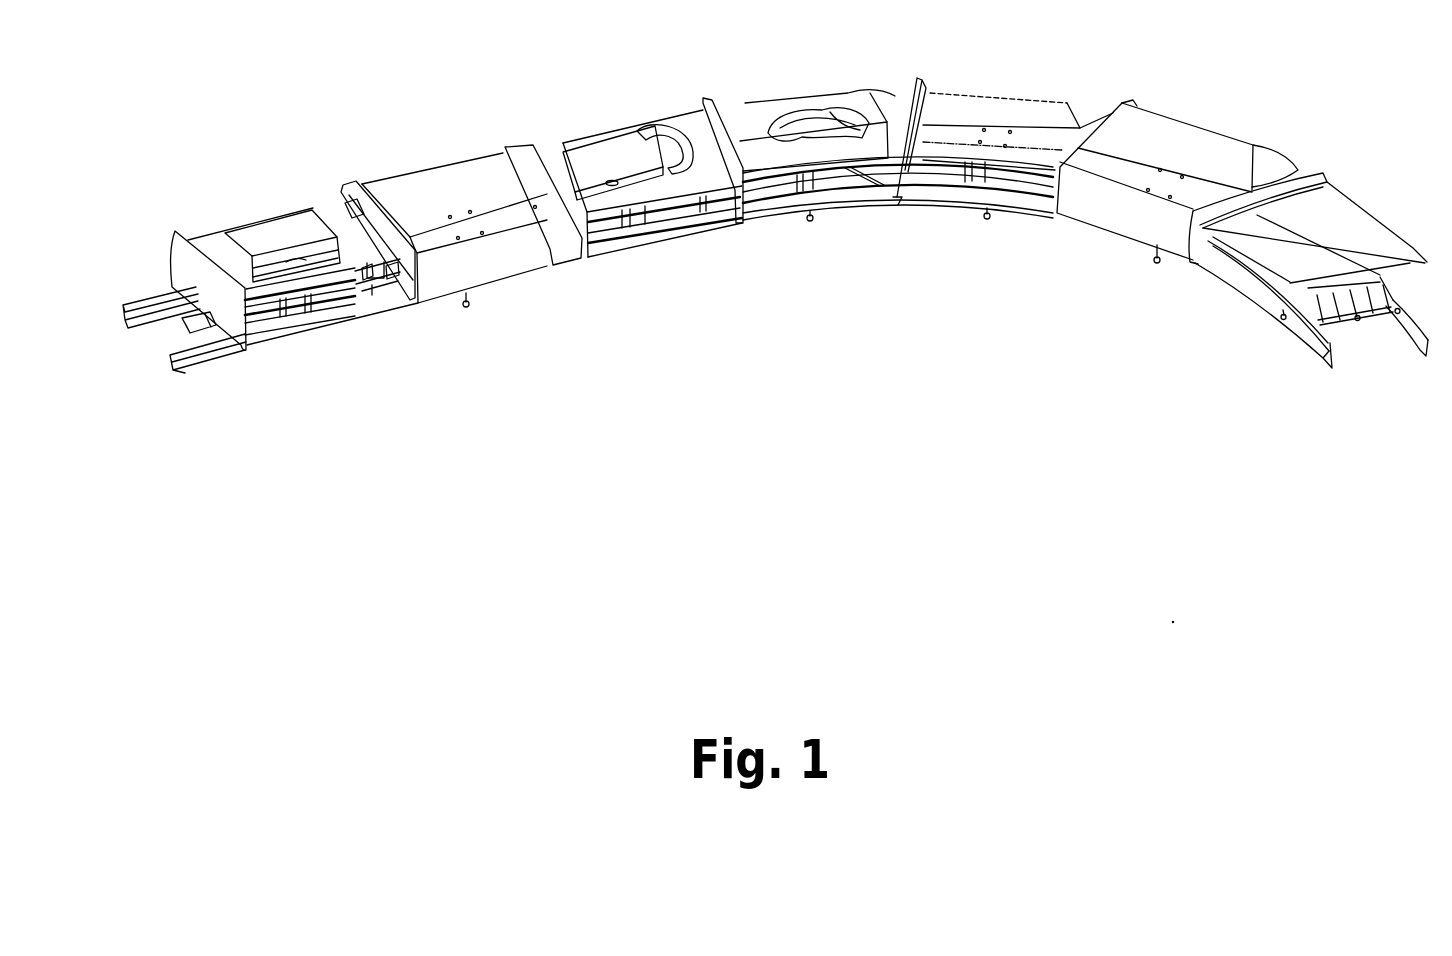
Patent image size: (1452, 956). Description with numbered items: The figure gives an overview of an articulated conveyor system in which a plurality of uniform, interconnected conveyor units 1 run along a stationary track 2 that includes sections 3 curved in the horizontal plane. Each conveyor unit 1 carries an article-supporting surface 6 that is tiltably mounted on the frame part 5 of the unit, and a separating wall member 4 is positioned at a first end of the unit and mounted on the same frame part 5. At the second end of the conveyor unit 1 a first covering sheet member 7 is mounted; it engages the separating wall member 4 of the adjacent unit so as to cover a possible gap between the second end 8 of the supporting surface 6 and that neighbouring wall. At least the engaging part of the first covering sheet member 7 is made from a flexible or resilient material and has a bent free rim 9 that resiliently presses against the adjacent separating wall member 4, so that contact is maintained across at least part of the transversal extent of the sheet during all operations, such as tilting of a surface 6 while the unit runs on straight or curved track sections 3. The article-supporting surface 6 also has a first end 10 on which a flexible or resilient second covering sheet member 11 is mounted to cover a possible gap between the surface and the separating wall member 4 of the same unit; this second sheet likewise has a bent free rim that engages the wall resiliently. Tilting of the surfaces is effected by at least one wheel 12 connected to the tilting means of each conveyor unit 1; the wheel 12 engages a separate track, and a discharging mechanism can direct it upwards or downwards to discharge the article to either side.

The conveyor unit 1 is at (227, 213).
The stationary track 2 is at (147, 360).
The curved track section 3 is at (957, 223).
The separating wall member 4 is at (182, 262).
The frame part 5 is at (353, 263).
The article-supporting surface 6 is at (467, 170).
The first covering sheet member 7 is at (387, 270).
The second end of the supporting surface 8 is at (393, 273).
The bent free rim 9 is at (350, 210).
The first end of the article-supporting surface 10 is at (930, 105).
The second covering sheet member 11 is at (926, 97).
The wheel 12 is at (810, 228).